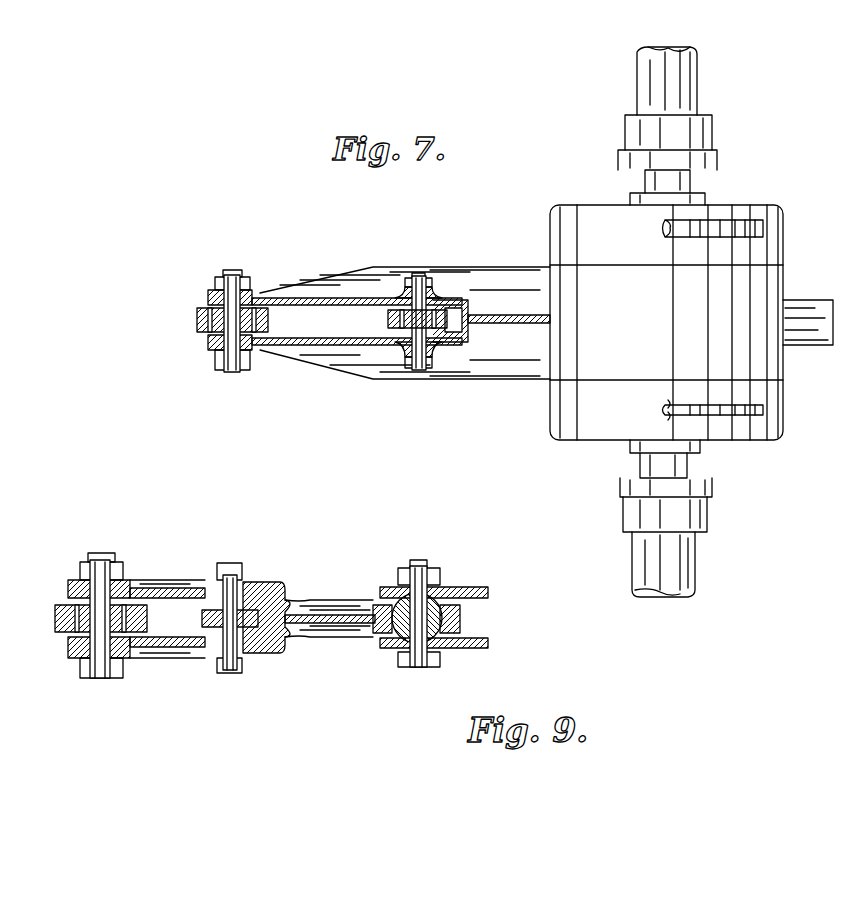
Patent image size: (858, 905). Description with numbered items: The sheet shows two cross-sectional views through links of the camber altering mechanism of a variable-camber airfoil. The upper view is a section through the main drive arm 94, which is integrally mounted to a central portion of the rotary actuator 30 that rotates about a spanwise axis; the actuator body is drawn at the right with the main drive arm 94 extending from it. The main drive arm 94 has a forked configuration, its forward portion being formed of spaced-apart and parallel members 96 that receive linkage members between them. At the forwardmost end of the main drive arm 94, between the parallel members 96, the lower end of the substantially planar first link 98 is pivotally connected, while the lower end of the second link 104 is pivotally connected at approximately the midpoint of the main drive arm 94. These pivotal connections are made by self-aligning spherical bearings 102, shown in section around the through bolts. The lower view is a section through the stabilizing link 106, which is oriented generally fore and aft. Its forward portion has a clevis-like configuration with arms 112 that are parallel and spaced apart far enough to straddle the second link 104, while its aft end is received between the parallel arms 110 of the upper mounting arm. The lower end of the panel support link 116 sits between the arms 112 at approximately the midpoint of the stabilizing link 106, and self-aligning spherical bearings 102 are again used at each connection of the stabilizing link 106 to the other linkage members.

In FIG. 7, the rotary actuator 30 is at (779, 437).
In FIG. 7, the main drive arm 94 is at (500, 368).
In FIG. 7, the parallel members 96 is at (318, 282).
In FIG. 7, the first link 98 is at (200, 327).
In FIG. 7, the self-aligning spherical bearings 102 is at (207, 333).
In FIG. 9, the self-aligning spherical bearings 102 is at (78, 630).
In FIG. 7, the second link 104 is at (388, 322).
In FIG. 9, the second link 104 is at (45, 613).
In FIG. 9, the stabilizing link 106 is at (325, 625).
In FIG. 9, the parallel arms 110 is at (460, 588).
In FIG. 9, the arms 112 is at (172, 588).
In FIG. 9, the panel support link 116 is at (265, 605).